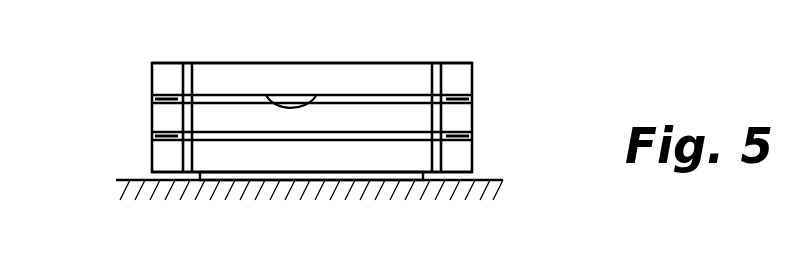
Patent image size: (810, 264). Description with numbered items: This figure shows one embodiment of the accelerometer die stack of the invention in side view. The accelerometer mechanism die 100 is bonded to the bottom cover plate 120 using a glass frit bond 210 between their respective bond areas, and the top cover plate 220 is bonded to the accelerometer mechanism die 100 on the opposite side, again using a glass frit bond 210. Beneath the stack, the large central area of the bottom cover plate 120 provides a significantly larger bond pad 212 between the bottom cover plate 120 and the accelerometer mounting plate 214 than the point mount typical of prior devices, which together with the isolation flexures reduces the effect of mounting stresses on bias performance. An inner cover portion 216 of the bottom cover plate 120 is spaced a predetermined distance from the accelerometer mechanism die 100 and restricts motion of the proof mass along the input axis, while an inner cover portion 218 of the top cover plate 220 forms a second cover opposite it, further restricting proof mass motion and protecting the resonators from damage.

The accelerometer mechanism die 100 is at (152, 120).
The bottom cover plate 120 is at (152, 157).
The glass frit bond 210 is at (473, 102).
The bond pad 212 is at (340, 177).
The accelerometer mounting plate 214 is at (495, 180).
The inner cover portion 216 is at (200, 138).
The inner cover portion 218 is at (313, 100).
The top cover plate 220 is at (152, 82).